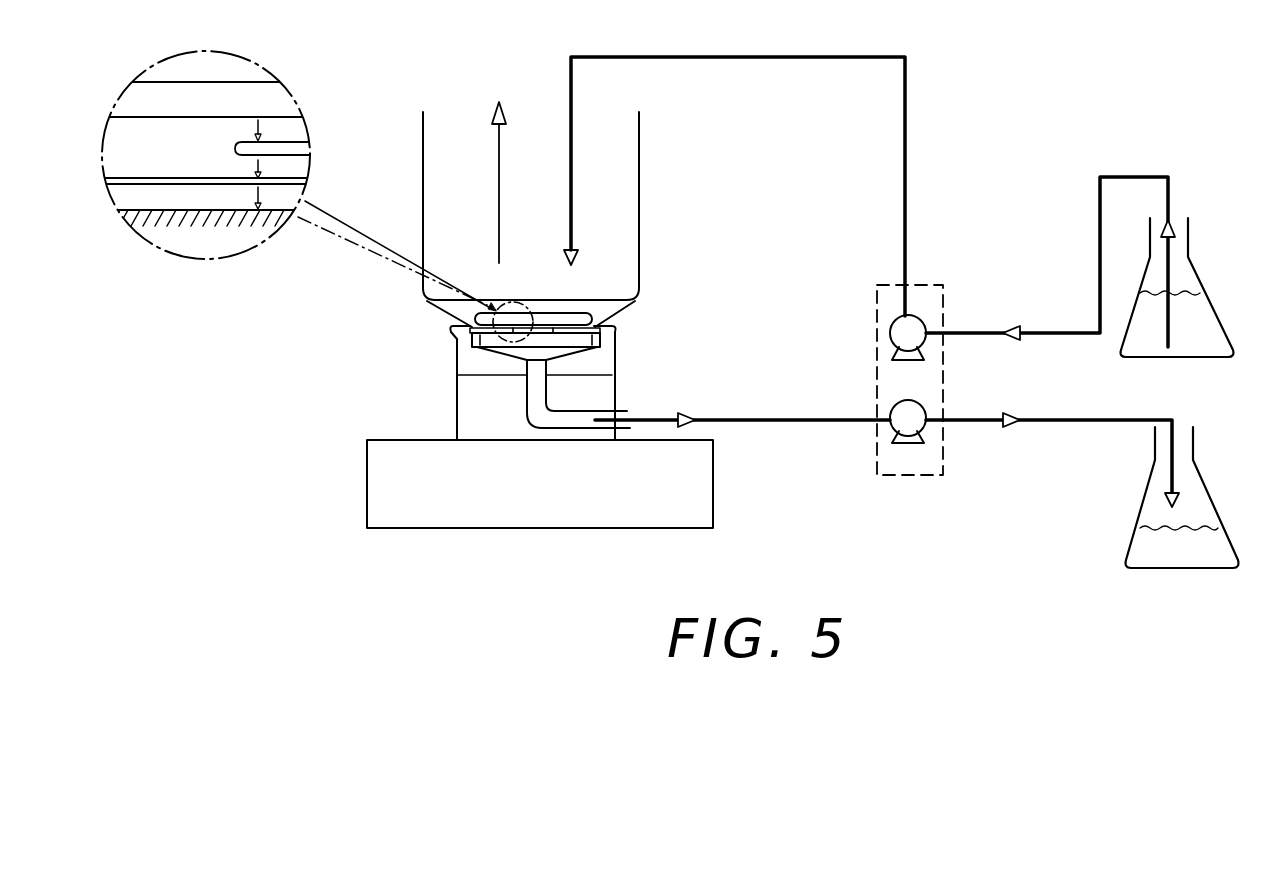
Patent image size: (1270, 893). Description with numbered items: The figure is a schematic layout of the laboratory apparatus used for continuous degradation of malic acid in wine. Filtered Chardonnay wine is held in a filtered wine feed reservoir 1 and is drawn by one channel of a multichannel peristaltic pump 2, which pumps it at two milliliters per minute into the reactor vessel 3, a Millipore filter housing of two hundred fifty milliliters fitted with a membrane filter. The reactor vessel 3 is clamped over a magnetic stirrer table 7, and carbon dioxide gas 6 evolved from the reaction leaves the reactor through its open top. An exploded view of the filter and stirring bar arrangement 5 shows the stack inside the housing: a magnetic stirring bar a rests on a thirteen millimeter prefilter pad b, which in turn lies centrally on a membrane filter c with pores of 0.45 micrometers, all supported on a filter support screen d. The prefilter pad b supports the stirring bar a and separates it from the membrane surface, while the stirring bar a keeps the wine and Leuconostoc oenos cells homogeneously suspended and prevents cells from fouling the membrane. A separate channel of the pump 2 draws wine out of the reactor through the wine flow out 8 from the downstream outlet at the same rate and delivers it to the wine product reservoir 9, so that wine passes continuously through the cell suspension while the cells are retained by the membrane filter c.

The filtered wine feed reservoir 1 is at (1205, 323).
The multichannel peristaltic pump 2 is at (962, 373).
The reactor vessel 3 is at (620, 173).
The filter and stirring bar arrangement 5 is at (390, 191).
The CO2 gas evolved from reactor 6 is at (500, 197).
The magnetic stirrer table 7 is at (378, 488).
The wine flow out of reactor 8 is at (733, 418).
The wine product reservoir 9 is at (1195, 503).
The magnetic stirring bar a is at (217, 93).
The prefilter pad b is at (283, 147).
The membrane filter c is at (140, 178).
The filter support screen d is at (207, 217).